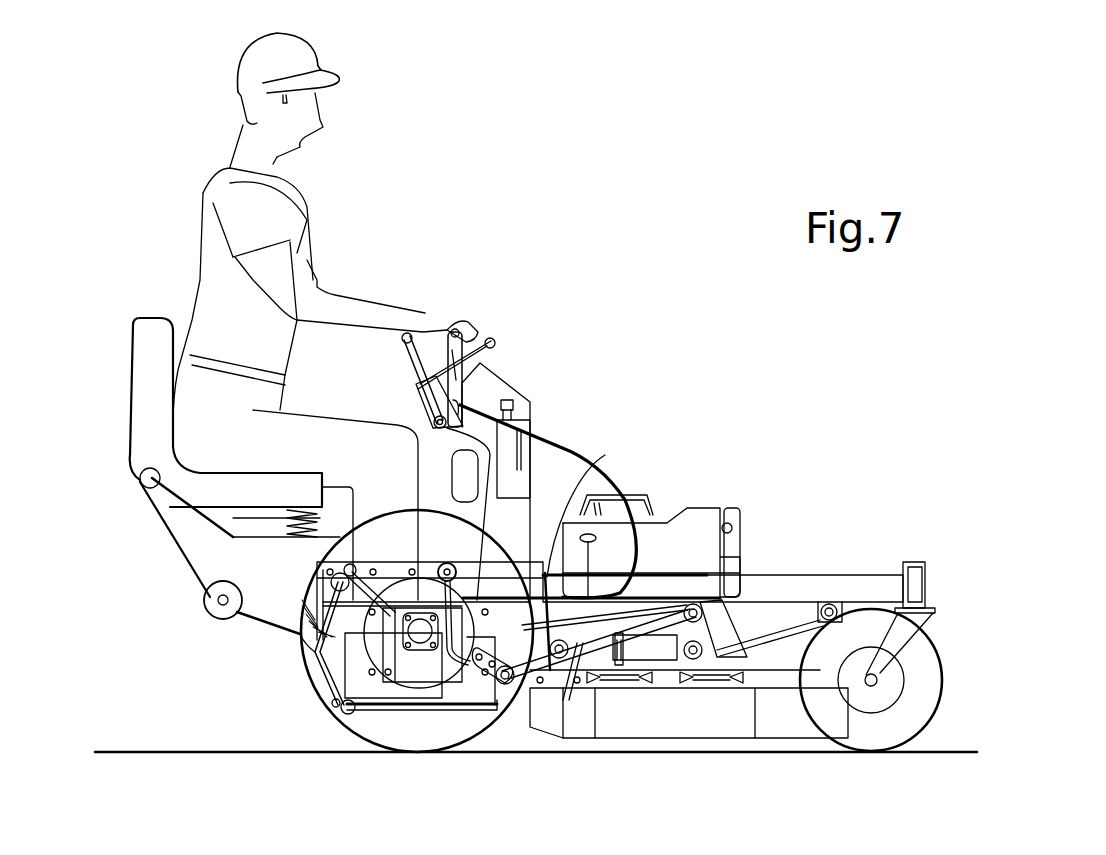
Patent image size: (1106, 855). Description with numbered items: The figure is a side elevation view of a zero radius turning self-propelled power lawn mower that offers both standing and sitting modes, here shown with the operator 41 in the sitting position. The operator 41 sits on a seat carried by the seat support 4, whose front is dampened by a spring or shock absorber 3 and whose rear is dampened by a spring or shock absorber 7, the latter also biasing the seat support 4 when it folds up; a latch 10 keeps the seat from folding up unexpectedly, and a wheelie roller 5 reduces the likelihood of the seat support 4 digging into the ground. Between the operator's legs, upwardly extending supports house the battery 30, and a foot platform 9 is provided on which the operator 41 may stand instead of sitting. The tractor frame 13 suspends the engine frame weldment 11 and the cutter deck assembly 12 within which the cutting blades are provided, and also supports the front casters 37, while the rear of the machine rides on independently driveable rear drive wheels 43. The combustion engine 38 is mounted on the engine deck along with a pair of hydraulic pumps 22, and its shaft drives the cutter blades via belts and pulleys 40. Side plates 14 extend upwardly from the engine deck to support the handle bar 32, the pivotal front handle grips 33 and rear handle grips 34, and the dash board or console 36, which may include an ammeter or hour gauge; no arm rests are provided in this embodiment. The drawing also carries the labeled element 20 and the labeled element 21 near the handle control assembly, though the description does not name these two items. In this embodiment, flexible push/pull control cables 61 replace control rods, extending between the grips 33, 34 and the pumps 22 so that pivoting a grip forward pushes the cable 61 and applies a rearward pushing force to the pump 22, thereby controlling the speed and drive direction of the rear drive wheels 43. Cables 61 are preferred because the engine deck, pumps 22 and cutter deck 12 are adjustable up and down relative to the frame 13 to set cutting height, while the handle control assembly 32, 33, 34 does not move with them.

The spring or shock absorber 3 is at (210, 517).
The seat support 4 is at (203, 552).
The wheelie roller 5 is at (208, 617).
The spring or shock absorber 7 is at (302, 653).
The foot platform 9 is at (400, 708).
The latch 10 is at (330, 553).
The engine frame weldment 11 is at (577, 660).
The cutter deck assembly 12 is at (787, 722).
The tractor frame 13 is at (830, 588).
The side plates 14 is at (523, 537).
The control cable 20 is at (541, 458).
The console bracket 21 is at (452, 436).
The hydraulic pumps 22 is at (482, 529).
The battery 30 is at (340, 703).
The handle bar 32 is at (480, 322).
The front handle grips 33 is at (494, 341).
The rear handle grips 34 is at (413, 333).
The dash board or console 36 is at (418, 387).
The front casters 37 is at (940, 643).
The combustion engine 38 is at (688, 543).
The belts and pulleys 40 is at (635, 683).
The operator 41 is at (293, 205).
The rear drive wheels 43 is at (330, 705).
The control cables 61 is at (626, 482).